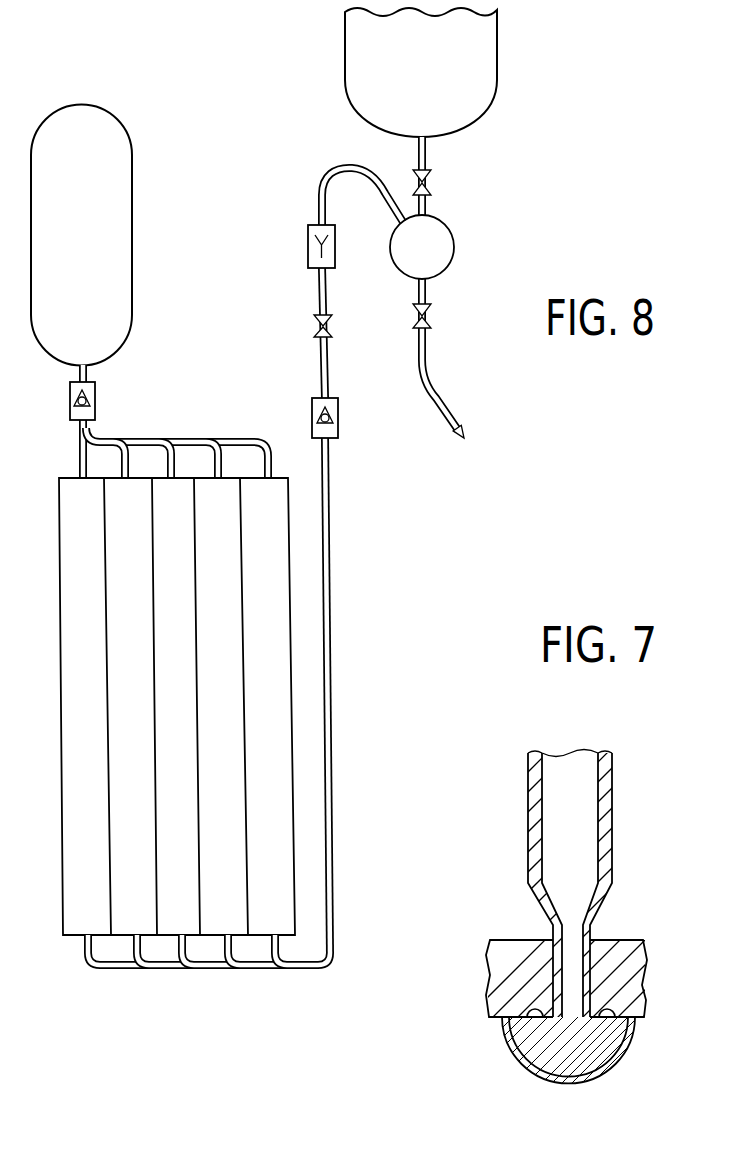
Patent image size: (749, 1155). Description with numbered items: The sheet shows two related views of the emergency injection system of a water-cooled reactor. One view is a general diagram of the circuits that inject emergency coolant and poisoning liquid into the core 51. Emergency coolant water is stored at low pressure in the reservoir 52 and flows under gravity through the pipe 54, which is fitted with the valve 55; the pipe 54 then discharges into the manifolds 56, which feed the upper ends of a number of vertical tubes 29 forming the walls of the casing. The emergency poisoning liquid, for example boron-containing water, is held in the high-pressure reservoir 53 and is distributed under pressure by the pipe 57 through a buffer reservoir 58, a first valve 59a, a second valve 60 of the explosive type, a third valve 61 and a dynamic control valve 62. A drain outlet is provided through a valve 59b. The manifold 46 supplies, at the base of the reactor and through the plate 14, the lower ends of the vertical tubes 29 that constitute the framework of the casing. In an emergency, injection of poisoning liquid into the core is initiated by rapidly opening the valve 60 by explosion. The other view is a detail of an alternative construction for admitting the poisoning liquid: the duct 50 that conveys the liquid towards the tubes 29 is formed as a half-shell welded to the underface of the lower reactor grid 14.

In FIG. 7, the lower reactor grid 14 is at (520, 958).
In FIG. 7, the vertical tubes 29 is at (533, 772).
In FIG. 8, the manifold 46 is at (163, 969).
In FIG. 7, the duct 50 is at (535, 1060).
In FIG. 8, the core 51 is at (82, 678).
In FIG. 8, the reservoir 52 is at (90, 255).
In FIG. 8, the high-pressure reservoir 53 is at (433, 71).
In FIG. 8, the pipe 54 is at (78, 373).
In FIG. 8, the valve 55 is at (73, 408).
In FIG. 8, the manifolds 56 is at (172, 455).
In FIG. 8, the pipe 57 is at (328, 178).
In FIG. 8, the buffer reservoir 58 is at (436, 258).
In FIG. 8, the first valve 59a is at (430, 186).
In FIG. 8, the valve 59b is at (430, 320).
In FIG. 8, the second valve 60 is at (308, 250).
In FIG. 8, the third valve 61 is at (318, 331).
In FIG. 8, the dynamic control valve 62 is at (312, 428).